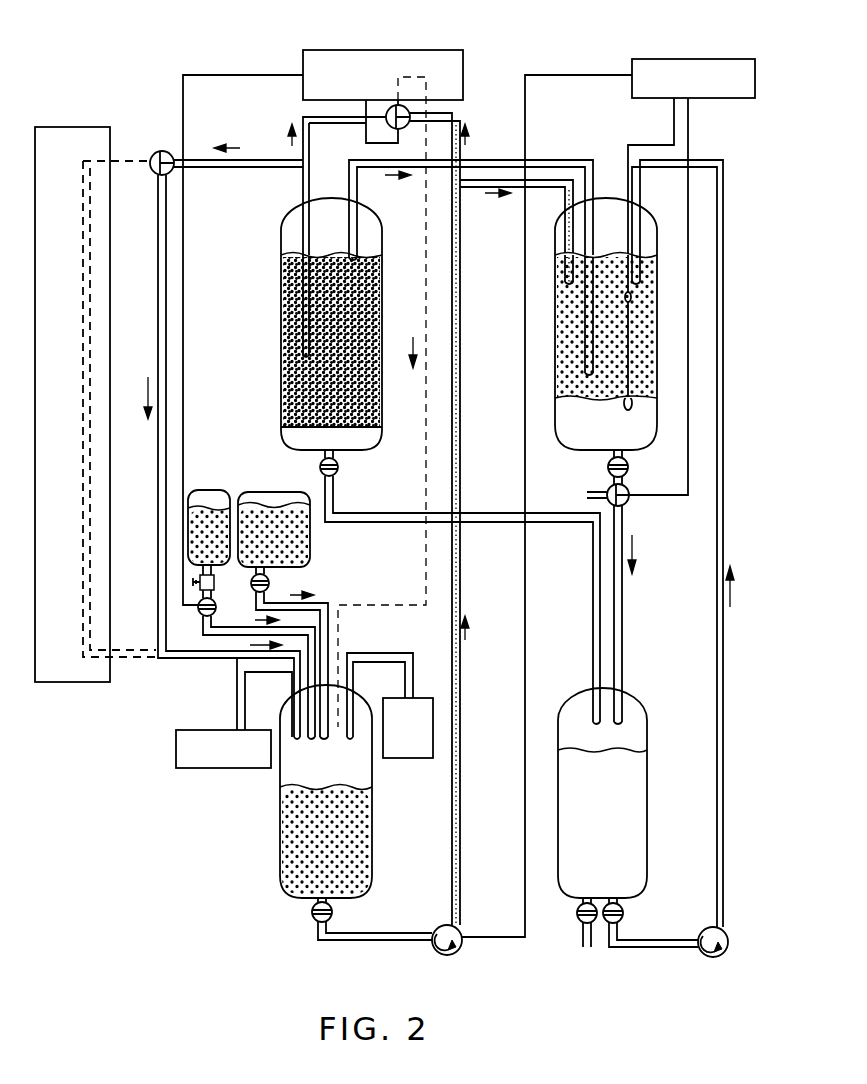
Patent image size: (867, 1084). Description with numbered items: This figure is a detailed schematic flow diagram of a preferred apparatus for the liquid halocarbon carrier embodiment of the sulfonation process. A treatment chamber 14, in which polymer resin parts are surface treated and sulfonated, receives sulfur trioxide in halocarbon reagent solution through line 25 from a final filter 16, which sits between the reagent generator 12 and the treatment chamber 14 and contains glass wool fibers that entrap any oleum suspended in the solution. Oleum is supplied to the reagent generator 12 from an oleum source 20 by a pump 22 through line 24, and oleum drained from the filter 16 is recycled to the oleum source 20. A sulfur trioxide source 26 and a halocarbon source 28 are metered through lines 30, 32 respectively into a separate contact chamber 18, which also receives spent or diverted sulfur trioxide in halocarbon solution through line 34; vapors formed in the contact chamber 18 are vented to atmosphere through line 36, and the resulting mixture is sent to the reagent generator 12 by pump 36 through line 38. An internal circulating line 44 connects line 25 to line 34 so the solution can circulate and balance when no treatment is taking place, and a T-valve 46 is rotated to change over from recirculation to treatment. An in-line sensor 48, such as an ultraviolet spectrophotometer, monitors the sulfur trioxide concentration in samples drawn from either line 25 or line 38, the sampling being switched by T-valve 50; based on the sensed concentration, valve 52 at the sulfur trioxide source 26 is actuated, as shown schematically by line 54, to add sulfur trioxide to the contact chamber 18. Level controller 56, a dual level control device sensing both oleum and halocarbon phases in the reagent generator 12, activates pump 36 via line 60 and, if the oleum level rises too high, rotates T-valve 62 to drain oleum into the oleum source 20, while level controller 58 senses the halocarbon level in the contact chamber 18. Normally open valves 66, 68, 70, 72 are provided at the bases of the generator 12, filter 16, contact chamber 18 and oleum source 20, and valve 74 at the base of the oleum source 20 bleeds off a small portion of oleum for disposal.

The reagent generator 12 is at (555, 403).
The treatment chamber 14 is at (83, 127).
The final filter 16 is at (281, 297).
The contact chamber 18 is at (372, 835).
The oleum source 20 is at (647, 792).
The pump 22 is at (713, 957).
The line 24 is at (723, 445).
The line 25 is at (253, 160).
The sulfur trioxide source 26 is at (205, 490).
The halocarbon source 28 is at (278, 492).
The line 30 is at (222, 625).
The line 32 is at (328, 603).
The line 34 is at (184, 658).
The vent line / pump 36 is at (392, 653).
The line 38 is at (460, 368).
The internal circulating line 44 is at (158, 292).
The T-valve 46 is at (160, 151).
The in-line sensor 48 is at (398, 50).
The T-valve 50 is at (386, 125).
The valve 52 is at (200, 615).
The line 54 is at (243, 75).
The level controller 56 is at (700, 59).
The level controller 58 is at (176, 750).
The line 60 is at (525, 787).
The T-valve 62 is at (629, 502).
The valve 66 is at (629, 465).
The valve 68 is at (338, 468).
The valve 70 is at (312, 914).
The valve 72 is at (625, 908).
The valve 74 is at (577, 923).